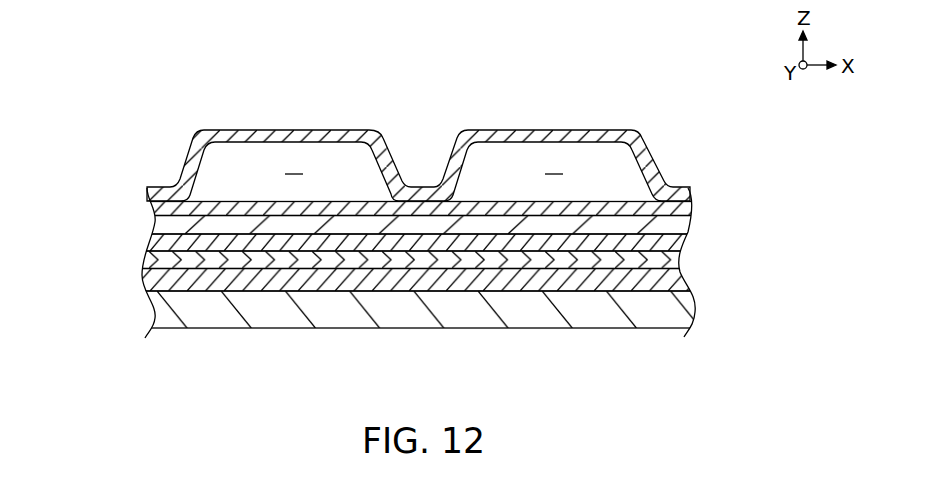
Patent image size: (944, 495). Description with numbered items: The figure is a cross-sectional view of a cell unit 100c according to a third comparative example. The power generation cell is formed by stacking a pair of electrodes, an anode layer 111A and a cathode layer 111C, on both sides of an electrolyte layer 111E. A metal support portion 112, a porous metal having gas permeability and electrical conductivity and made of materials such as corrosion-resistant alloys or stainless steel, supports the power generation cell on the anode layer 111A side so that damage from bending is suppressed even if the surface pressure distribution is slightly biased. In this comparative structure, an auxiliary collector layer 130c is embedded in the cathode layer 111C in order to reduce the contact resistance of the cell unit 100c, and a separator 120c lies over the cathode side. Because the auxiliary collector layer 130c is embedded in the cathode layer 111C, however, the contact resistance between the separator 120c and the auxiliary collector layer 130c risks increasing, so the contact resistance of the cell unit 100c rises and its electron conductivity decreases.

The cell unit 100c is at (137, 83).
The separator 120c is at (658, 144).
The cathode layer 111C is at (692, 203).
The auxiliary collector layer 130c is at (677, 225).
The electrolyte layer 111E is at (672, 260).
The anode layer 111A is at (673, 278).
The metal support portion 112 is at (670, 307).